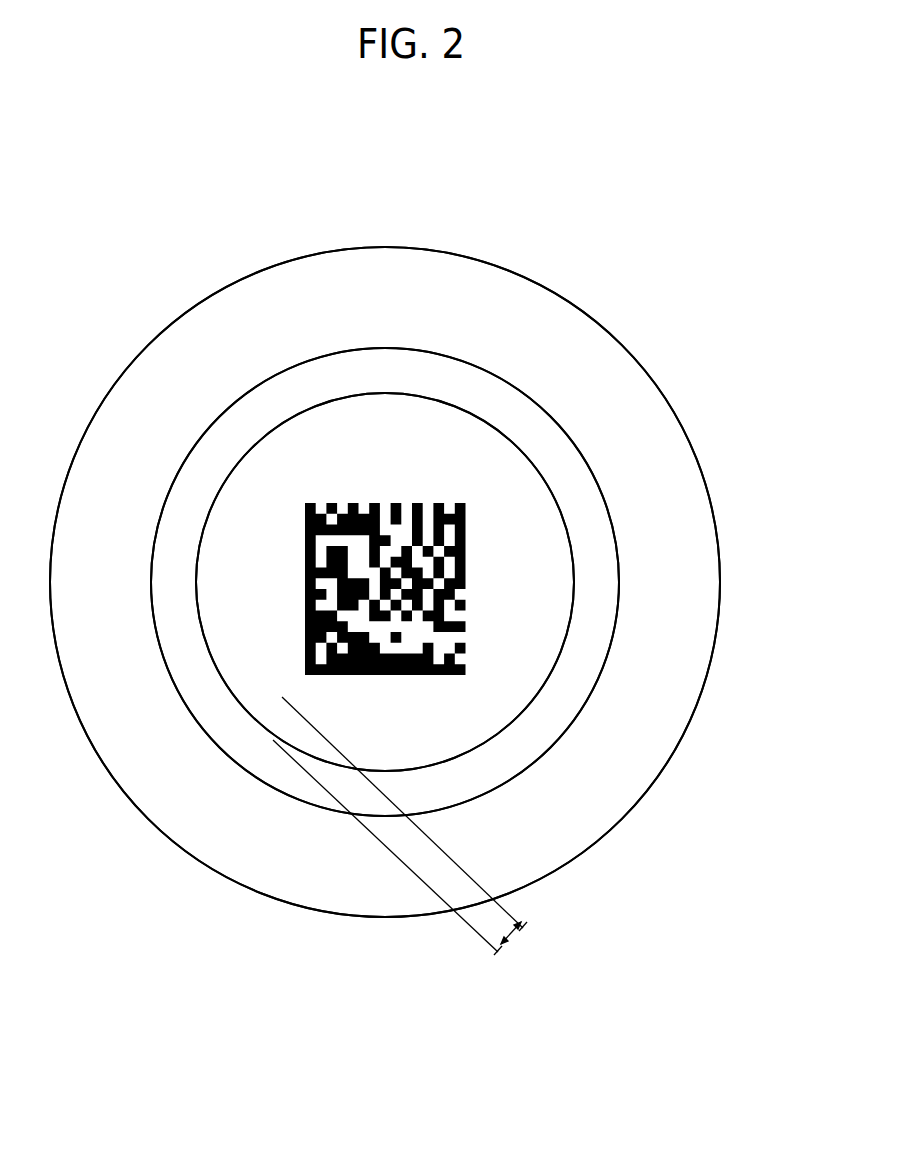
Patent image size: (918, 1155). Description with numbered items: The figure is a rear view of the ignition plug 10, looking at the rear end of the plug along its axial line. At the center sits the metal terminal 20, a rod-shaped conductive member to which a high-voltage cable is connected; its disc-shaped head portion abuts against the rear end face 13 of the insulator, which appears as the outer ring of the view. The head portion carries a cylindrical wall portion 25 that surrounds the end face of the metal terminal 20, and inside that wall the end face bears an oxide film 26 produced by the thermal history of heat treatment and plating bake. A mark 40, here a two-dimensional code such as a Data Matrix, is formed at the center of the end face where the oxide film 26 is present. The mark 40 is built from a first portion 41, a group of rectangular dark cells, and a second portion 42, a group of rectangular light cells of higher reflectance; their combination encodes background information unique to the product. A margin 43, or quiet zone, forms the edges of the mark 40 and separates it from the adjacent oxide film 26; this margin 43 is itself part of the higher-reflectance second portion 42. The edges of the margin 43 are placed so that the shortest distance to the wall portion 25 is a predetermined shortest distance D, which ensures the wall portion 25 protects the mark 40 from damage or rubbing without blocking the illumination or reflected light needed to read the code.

The ignition plug 10 is at (763, 317).
The rear end face 13 is at (640, 456).
The metal terminal 20 is at (239, 368).
The wall portion 25 is at (517, 420).
The oxide film 26 is at (342, 430).
The mark 40 is at (246, 550).
The first portion 41 is at (360, 505).
The second portion 42 is at (420, 630).
The margin 43 is at (470, 678).
The predetermined shortest distance D is at (510, 933).